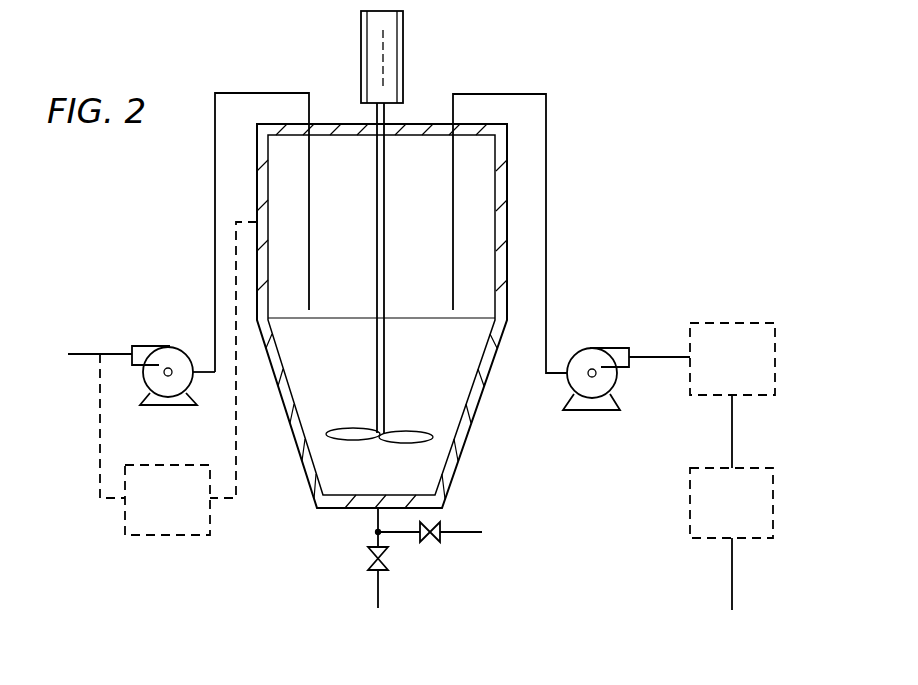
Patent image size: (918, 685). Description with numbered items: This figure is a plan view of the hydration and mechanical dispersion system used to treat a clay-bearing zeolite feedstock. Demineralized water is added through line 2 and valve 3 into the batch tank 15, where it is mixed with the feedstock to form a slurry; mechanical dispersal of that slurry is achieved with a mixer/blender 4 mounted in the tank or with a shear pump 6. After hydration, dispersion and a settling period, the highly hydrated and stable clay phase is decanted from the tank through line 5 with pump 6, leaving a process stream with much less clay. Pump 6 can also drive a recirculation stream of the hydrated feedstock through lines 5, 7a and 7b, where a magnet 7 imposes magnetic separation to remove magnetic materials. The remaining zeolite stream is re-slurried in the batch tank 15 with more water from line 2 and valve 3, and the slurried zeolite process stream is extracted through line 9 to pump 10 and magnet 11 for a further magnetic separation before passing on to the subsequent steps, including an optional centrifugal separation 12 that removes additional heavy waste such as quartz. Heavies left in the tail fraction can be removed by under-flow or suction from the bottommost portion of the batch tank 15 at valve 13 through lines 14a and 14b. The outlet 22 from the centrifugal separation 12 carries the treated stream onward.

The line 2 is at (462, 533).
The valve 3 is at (432, 543).
The mixer/blender 4 is at (384, 363).
The line 5 is at (262, 93).
The pump 6 is at (165, 345).
The magnet 7 is at (165, 538).
The line 7a is at (100, 435).
The line 7b is at (236, 475).
The line 9 is at (546, 233).
The pump 10 is at (600, 347).
The magnet 11 is at (733, 323).
The centrifugal separation 12 is at (750, 466).
The valve 13 is at (366, 558).
The line 14a is at (377, 517).
The line 14b is at (378, 588).
The batch tank 15 is at (422, 124).
The outlet line 22 is at (732, 573).